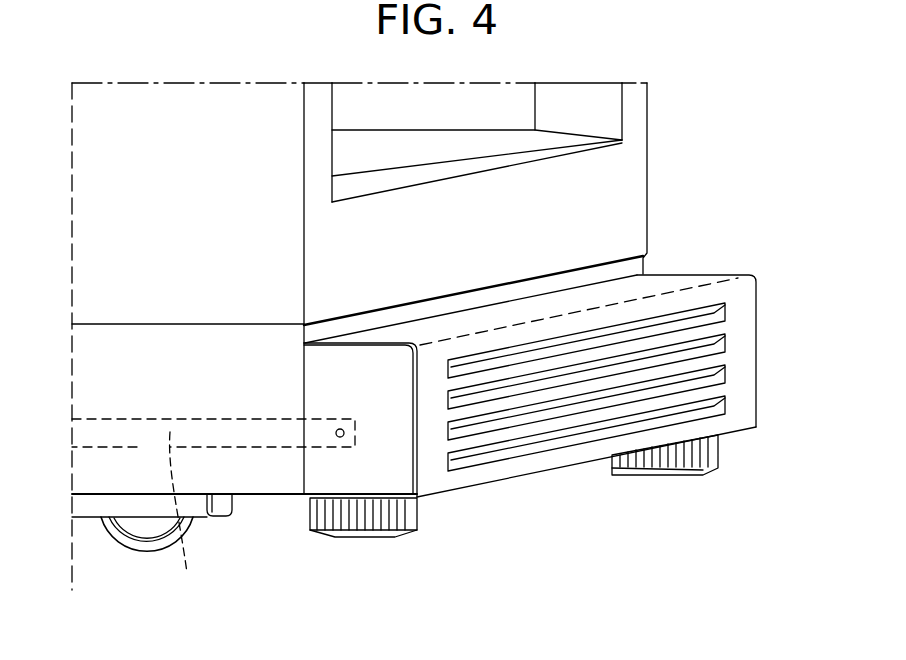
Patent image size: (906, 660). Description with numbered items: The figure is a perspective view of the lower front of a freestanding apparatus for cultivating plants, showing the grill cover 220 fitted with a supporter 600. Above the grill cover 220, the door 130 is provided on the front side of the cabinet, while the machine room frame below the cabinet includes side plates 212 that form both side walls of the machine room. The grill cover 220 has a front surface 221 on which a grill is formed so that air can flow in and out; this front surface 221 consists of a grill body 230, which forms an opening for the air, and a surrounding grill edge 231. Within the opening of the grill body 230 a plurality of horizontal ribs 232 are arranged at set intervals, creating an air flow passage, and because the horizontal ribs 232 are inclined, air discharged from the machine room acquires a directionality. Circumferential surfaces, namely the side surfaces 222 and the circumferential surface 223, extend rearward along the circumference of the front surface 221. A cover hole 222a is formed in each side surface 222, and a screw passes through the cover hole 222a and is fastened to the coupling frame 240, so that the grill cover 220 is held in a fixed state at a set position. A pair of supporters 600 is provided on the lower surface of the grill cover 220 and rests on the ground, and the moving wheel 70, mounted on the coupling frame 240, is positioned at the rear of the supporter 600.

The door 130 is at (623, 173).
The side plate 212 is at (100, 405).
The grill cover 220 is at (414, 383).
The front surface 221 is at (745, 365).
The side surface 222 is at (374, 455).
The cover hole 222a is at (336, 435).
The circumferential surface 223 is at (658, 280).
The grill body 230 is at (624, 413).
The grill edge 231 is at (432, 370).
The horizontal rib 232 is at (710, 313).
The coupling frame 240 is at (187, 516).
The moving wheel 70 is at (127, 550).
The supporter 600 is at (352, 551).